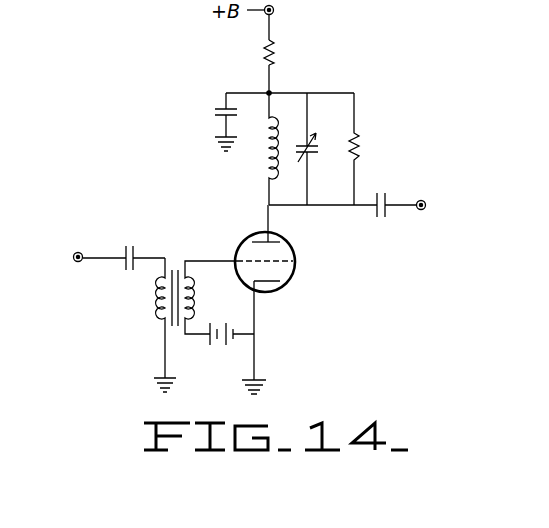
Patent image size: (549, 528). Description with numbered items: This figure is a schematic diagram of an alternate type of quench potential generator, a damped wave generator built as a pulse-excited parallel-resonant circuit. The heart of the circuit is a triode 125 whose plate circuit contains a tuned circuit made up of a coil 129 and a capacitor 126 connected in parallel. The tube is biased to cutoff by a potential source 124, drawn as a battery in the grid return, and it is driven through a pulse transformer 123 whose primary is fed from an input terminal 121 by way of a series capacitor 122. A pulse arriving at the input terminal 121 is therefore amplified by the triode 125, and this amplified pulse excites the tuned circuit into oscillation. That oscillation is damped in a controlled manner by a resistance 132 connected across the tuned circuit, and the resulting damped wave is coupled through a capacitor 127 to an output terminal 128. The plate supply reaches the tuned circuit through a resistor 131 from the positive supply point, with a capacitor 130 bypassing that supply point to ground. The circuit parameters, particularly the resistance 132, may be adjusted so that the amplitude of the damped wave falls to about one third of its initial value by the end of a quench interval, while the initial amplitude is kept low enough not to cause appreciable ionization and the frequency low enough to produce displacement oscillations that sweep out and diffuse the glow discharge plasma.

The input terminal 121 is at (72, 257).
The coupling capacitor 122 is at (131, 272).
The pulse transformer 123 is at (173, 268).
The potential source 124 is at (218, 348).
The triode 125 is at (297, 277).
The capacitor 126 is at (318, 152).
The capacitor 127 is at (381, 220).
The output terminal 128 is at (428, 205).
The coil 129 is at (260, 160).
The bypass capacitor 130 is at (213, 114).
The plate load resistor 131 is at (279, 52).
The resistance 132 is at (366, 148).